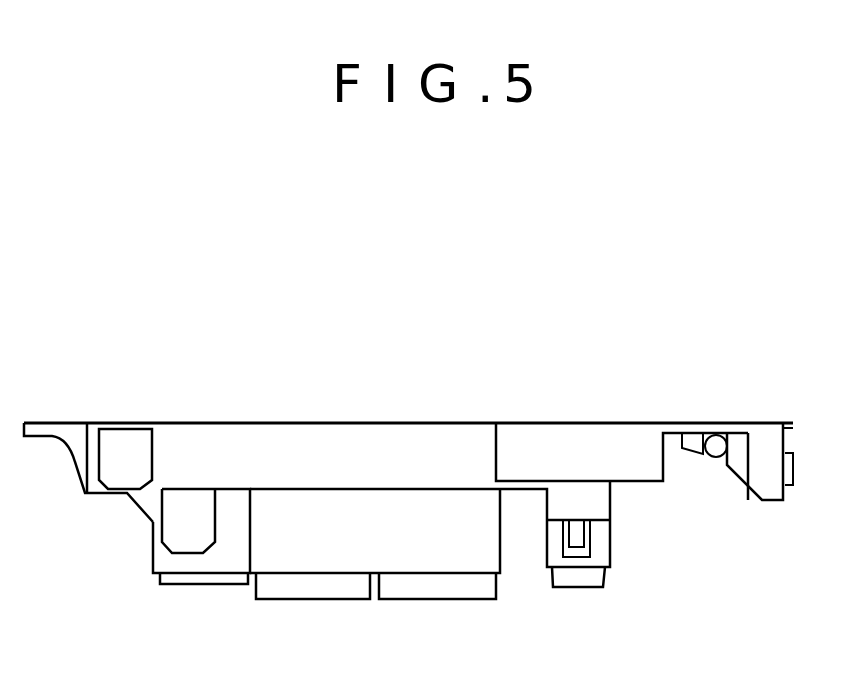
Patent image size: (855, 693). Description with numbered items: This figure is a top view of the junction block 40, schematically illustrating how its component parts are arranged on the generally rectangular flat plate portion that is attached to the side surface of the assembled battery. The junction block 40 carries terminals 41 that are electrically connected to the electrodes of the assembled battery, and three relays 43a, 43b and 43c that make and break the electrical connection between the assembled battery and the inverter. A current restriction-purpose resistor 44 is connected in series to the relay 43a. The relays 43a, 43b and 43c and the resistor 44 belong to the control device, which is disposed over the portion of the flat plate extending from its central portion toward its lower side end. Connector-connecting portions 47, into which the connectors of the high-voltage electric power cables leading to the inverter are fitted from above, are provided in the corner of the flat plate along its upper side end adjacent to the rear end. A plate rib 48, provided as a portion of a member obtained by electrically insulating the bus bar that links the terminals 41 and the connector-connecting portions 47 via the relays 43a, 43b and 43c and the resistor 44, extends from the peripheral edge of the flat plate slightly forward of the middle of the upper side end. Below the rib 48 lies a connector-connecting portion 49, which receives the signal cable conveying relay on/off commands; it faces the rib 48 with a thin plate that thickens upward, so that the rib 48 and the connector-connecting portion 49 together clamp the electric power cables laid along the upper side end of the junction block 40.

The junction block 40 is at (356, 394).
The terminal 41 is at (785, 440).
The relay 43a is at (193, 584).
The relay 43b is at (313, 599).
The relay 43c is at (437, 599).
The current restriction-purpose resistor 44 is at (502, 532).
The connector-connecting portion 47 is at (188, 488).
The plate rib 48 is at (632, 482).
The connector-connecting portion 49 is at (575, 587).